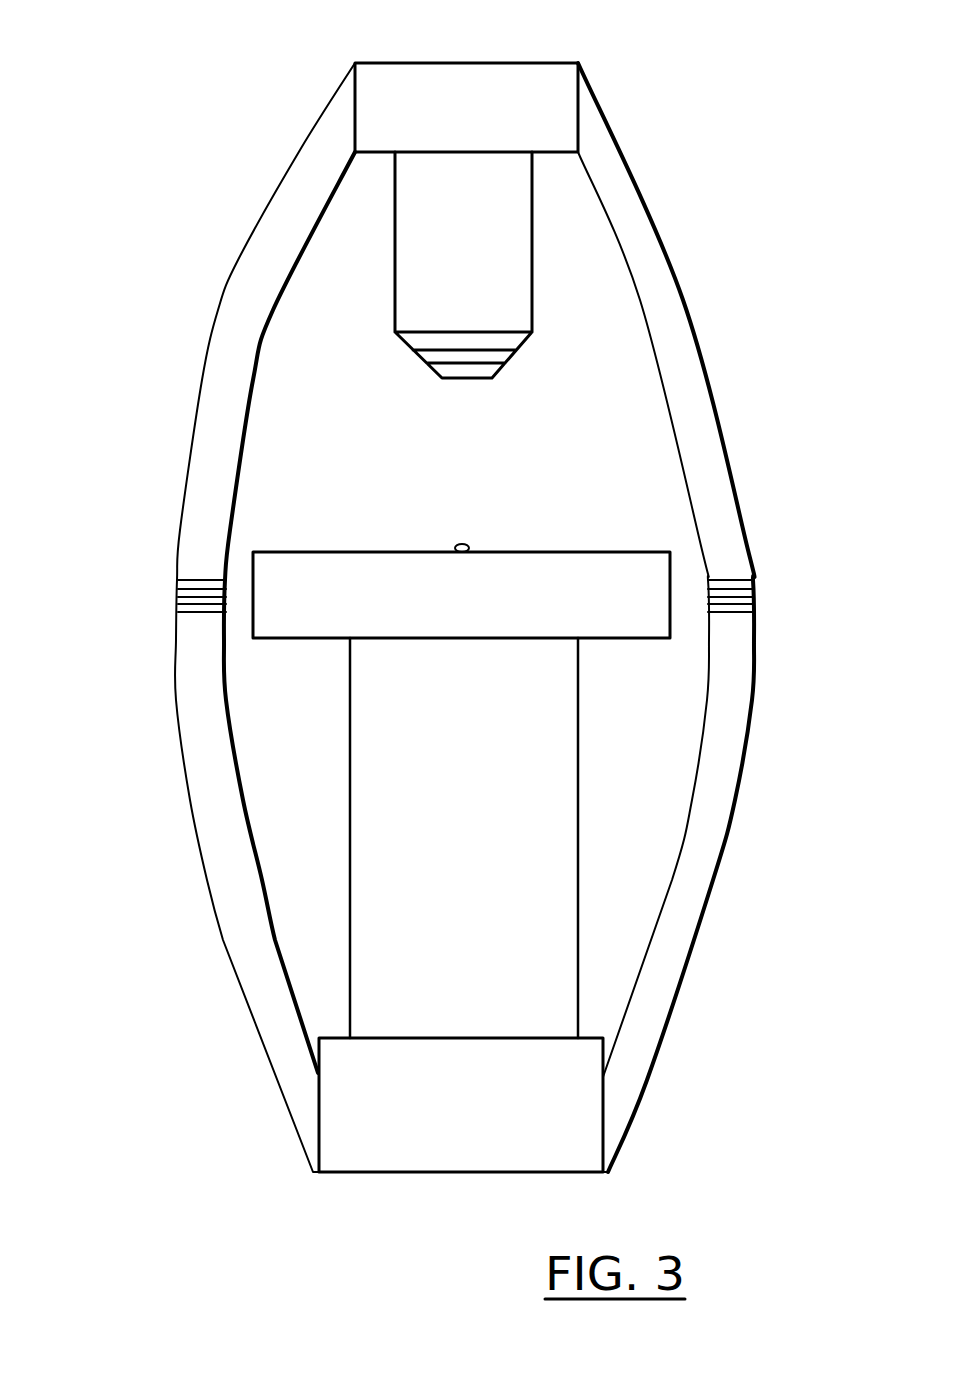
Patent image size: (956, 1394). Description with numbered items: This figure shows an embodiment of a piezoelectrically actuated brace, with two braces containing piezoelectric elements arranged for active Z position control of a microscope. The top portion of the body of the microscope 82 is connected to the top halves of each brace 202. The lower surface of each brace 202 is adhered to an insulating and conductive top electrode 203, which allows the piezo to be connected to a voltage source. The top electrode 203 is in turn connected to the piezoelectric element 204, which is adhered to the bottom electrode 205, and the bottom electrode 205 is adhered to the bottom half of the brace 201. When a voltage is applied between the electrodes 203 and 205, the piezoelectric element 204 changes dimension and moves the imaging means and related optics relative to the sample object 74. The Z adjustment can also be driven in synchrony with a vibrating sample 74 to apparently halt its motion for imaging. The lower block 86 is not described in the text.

The sample object 74 is at (470, 547).
The body of the microscope 82 is at (548, 83).
The lower mounting block / base 86 is at (377, 1153).
The bottom half of the brace 201 is at (220, 874).
The brace 202 is at (250, 262).
The top electrode 203 is at (187, 583).
The piezoelectric element 204 is at (182, 594).
The bottom electrode 205 is at (182, 608).